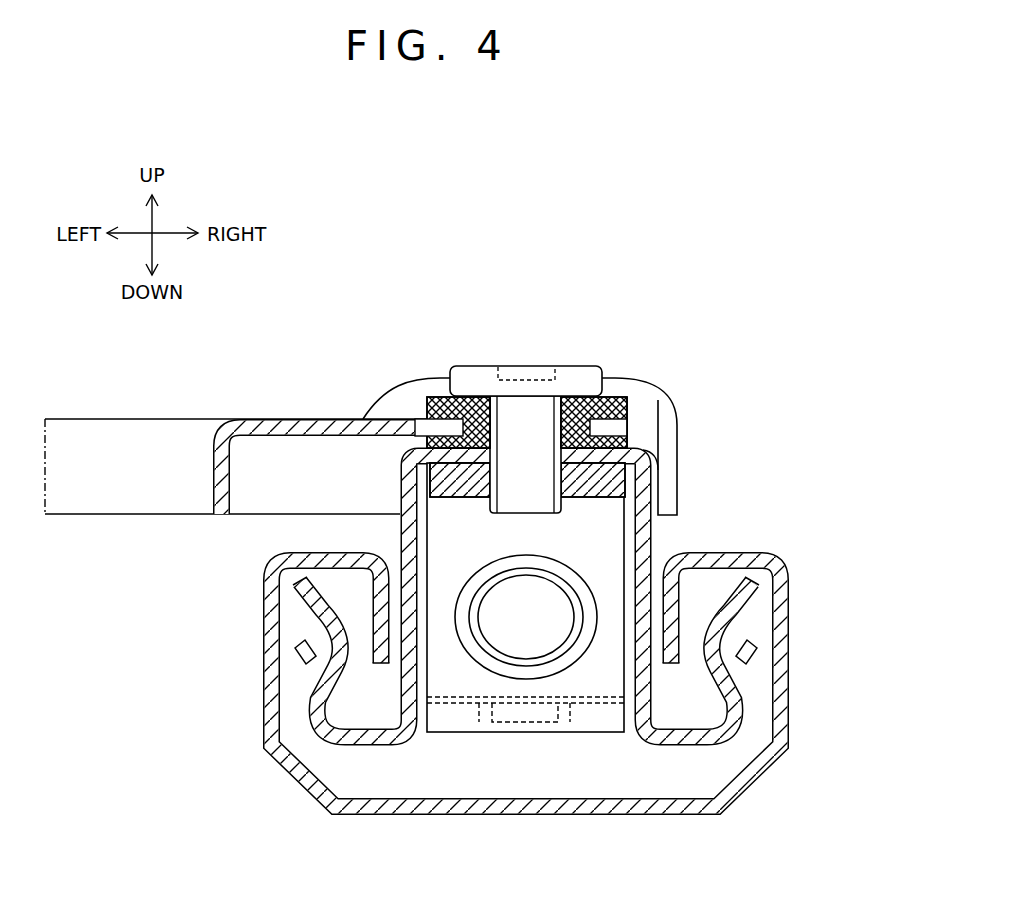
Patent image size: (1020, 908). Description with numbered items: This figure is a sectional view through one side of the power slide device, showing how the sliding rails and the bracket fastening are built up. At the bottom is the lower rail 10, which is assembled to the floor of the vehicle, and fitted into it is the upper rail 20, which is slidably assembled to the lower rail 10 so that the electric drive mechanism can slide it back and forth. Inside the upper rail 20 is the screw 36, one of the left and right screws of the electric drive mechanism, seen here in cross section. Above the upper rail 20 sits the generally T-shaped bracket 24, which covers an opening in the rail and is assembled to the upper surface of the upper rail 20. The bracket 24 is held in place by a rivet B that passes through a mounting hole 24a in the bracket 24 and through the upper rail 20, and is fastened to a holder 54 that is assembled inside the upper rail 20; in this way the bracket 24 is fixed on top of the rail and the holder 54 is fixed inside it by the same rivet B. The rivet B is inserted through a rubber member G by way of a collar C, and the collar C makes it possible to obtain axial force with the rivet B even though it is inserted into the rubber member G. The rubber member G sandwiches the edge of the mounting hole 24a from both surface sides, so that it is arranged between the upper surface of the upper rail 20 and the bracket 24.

The lower rail 10 is at (783, 628).
The upper rail 20 is at (649, 530).
The bracket 24 is at (302, 422).
The mounting hole 24a is at (580, 396).
The screw 36 is at (543, 630).
The holder 54 is at (618, 482).
The rivet B is at (478, 378).
The collar C is at (610, 396).
The rubber member G is at (630, 408).